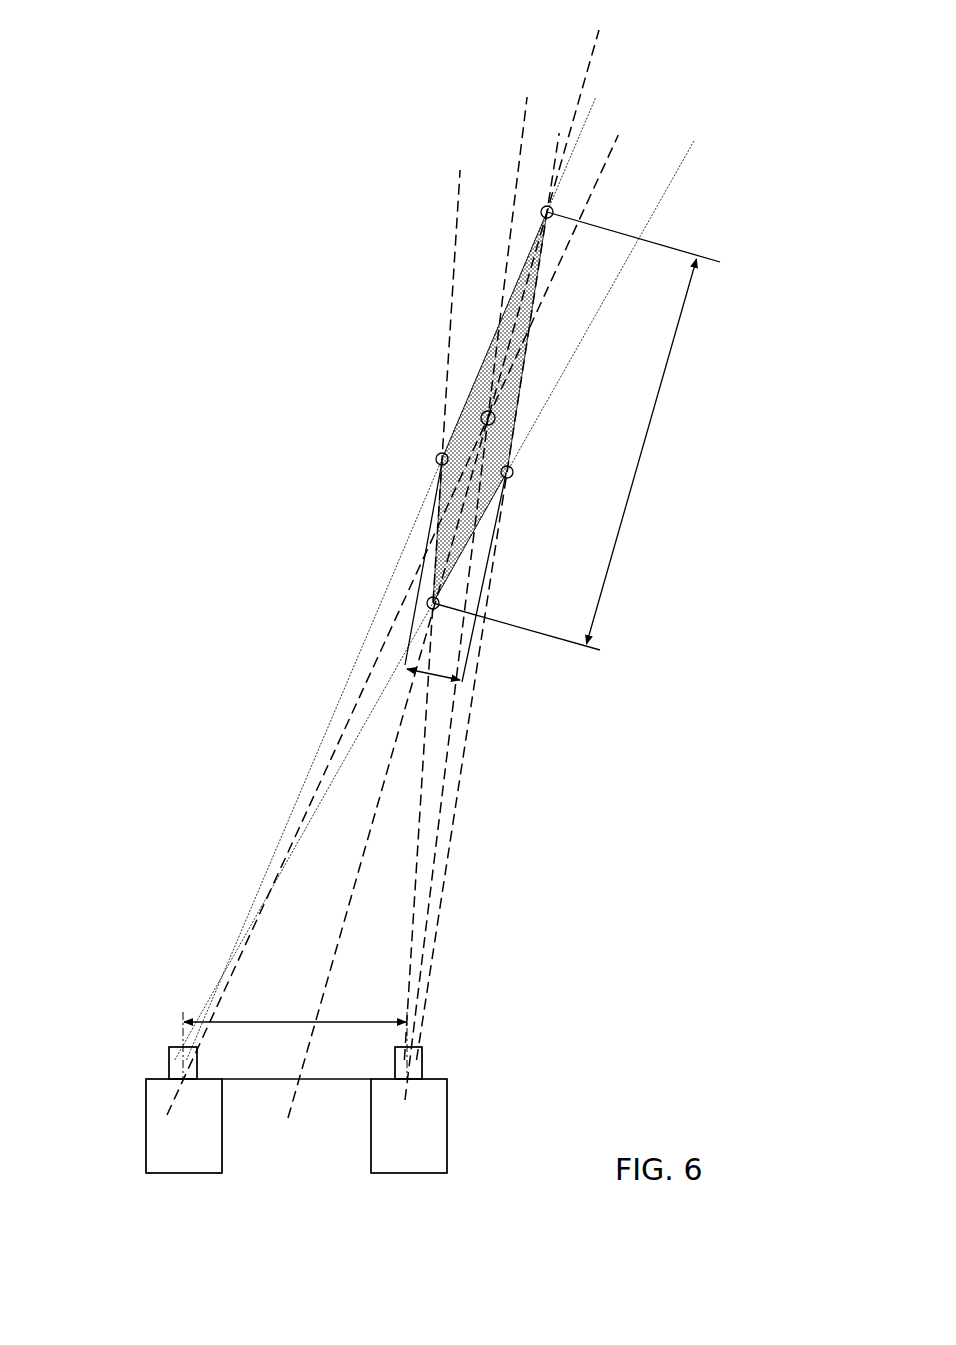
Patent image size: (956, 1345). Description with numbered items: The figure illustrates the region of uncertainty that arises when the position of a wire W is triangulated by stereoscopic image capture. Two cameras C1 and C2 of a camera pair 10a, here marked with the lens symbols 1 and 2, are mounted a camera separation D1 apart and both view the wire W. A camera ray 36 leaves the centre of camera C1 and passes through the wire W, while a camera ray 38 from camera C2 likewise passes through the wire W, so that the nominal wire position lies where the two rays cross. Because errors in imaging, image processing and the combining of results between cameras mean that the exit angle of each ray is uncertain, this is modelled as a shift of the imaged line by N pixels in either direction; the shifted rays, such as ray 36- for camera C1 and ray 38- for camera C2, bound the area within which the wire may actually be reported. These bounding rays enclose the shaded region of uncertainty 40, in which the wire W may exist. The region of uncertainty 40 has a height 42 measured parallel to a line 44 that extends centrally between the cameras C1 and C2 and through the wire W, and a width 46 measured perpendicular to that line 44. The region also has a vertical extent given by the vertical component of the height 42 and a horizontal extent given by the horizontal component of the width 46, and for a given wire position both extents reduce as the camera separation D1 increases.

The camera pair 10a is at (303, 1180).
The camera C1 is at (162, 1133).
The camera C2 is at (420, 1142).
The first camera lens 1 is at (183, 1084).
The second camera lens 2 is at (412, 1084).
The camera separation D1 is at (295, 1038).
The camera ray 36 is at (366, 693).
The shifted ray 36- is at (322, 752).
The camera ray 38 is at (445, 772).
The shifted ray 38- is at (423, 795).
The region of uncertainty 40 is at (522, 378).
The height 42 is at (576, 431).
The line 44 is at (352, 893).
The width 46 is at (435, 678).
The wire W is at (481, 421).